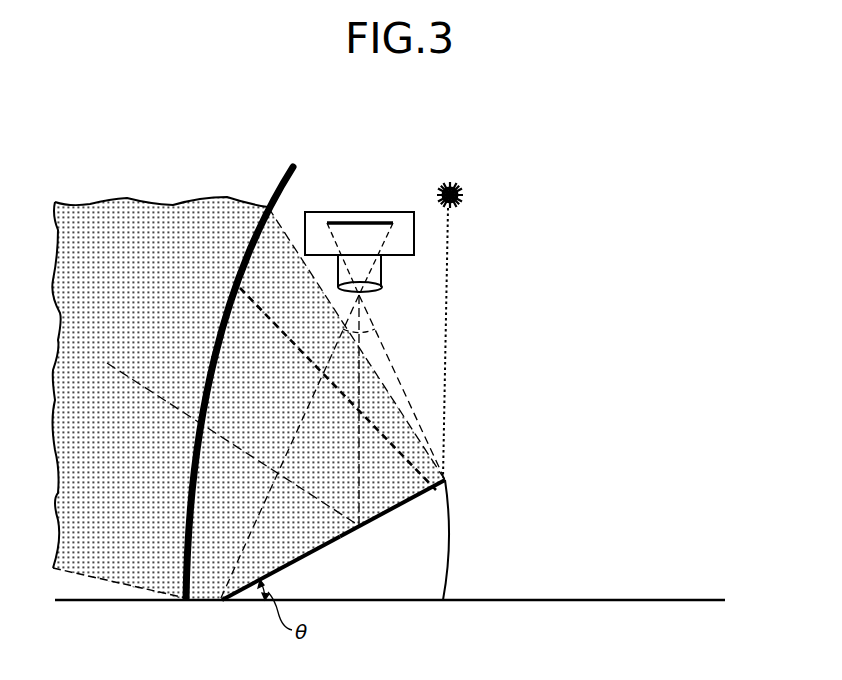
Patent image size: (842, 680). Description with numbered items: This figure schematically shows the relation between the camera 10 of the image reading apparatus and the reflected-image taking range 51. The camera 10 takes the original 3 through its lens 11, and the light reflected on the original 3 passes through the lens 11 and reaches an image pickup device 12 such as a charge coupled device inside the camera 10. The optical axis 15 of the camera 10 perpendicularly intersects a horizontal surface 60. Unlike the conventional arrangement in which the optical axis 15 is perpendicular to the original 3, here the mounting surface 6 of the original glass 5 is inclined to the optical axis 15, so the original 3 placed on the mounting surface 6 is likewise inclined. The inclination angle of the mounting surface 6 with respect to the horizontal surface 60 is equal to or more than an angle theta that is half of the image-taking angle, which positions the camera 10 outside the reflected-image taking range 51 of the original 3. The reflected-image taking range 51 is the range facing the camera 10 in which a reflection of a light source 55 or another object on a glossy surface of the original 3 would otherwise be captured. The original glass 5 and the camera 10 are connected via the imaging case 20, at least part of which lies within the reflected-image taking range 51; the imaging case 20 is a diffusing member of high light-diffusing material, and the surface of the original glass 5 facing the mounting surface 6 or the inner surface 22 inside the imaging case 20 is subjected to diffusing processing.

The original 3 is at (290, 561).
The original glass 5 is at (427, 535).
The mounting surface 6 is at (378, 514).
The camera 10 is at (397, 212).
The lens 11 is at (367, 294).
The image pickup device 12 is at (352, 222).
The optical axis 15 is at (362, 443).
The imaging case 20 is at (226, 313).
The inner surface 22 is at (212, 365).
The reflected-image taking range 51 is at (135, 227).
The light source 55 is at (455, 183).
The horizontal surface 60 is at (385, 603).